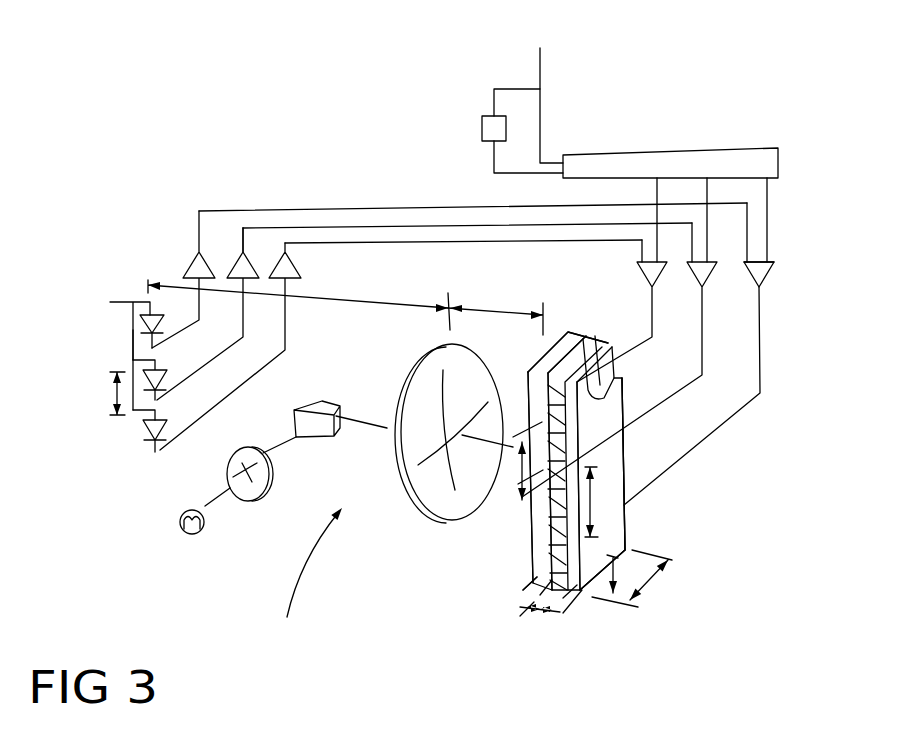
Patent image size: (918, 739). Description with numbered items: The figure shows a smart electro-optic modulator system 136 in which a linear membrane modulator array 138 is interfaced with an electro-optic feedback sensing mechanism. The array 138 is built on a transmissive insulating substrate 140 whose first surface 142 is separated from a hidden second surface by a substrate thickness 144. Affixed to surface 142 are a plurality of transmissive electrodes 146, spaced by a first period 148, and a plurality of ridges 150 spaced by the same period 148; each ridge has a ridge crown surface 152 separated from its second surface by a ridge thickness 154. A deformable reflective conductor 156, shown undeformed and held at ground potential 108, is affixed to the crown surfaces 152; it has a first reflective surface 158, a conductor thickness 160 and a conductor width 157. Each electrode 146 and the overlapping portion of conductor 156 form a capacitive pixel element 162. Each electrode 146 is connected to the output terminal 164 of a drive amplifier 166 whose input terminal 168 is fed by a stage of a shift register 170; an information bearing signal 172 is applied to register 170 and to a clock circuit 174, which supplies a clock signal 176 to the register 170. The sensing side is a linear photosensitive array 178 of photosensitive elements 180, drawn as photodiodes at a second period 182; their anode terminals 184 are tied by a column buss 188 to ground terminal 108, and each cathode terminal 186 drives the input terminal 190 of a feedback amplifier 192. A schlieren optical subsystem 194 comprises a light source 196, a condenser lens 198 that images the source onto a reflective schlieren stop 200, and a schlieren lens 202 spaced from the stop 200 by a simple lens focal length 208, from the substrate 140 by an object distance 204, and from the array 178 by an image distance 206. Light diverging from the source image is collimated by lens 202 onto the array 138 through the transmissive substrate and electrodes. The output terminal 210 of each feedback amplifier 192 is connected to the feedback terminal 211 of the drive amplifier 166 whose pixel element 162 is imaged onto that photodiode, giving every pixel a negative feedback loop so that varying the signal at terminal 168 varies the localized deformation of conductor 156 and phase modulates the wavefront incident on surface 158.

The ground potential 108 is at (110, 320).
The smart electro-optic modulator system 136 is at (322, 166).
The linear membrane modulator array 138 is at (655, 495).
The transmissive insulating substrate 140 is at (528, 517).
The first surface 142 is at (563, 555).
The substrate thickness 144 is at (522, 618).
The transmissive electrodes 146 is at (562, 545).
The first period 148 is at (605, 412).
The ridges 150 is at (573, 333).
The ridge crown surface 152 is at (603, 357).
The ridge thickness 154 is at (527, 632).
The deformable reflective conductor 156 is at (617, 540).
The conductor width 157 is at (657, 580).
The first reflective surface 158 is at (605, 405).
The conductor thickness 160 is at (552, 613).
The capacitive pixel element 162 is at (605, 468).
The output terminal 164 is at (764, 289).
The drive amplifier 166 is at (767, 272).
The input terminal 168 is at (770, 255).
The shift register 170 is at (585, 163).
The information bearing signal 172 is at (547, 68).
The clock circuit 174 is at (490, 128).
The clock signal 176 is at (490, 157).
The linear photosensitive array 178 is at (127, 341).
The photosensitive elements 180 is at (165, 327).
The second period 182 is at (113, 393).
The anode terminal 184 is at (143, 425).
The cathode terminal 186 is at (148, 445).
The column buss 188 is at (129, 304).
The input terminal 190 is at (300, 258).
The feedback amplifier 192 is at (298, 242).
The schlieren optical subsystem 194 is at (292, 591).
The light source 196 is at (205, 530).
The condenser lens 198 is at (245, 505).
The reflective schlieren stop 200 is at (312, 400).
The schlieren lens 202 is at (407, 498).
The object distance 204 is at (482, 307).
The image distance 206 is at (382, 297).
The simple lens focal length 208 is at (363, 417).
The output terminal 210 is at (277, 250).
The feedback terminal 211 is at (753, 252).